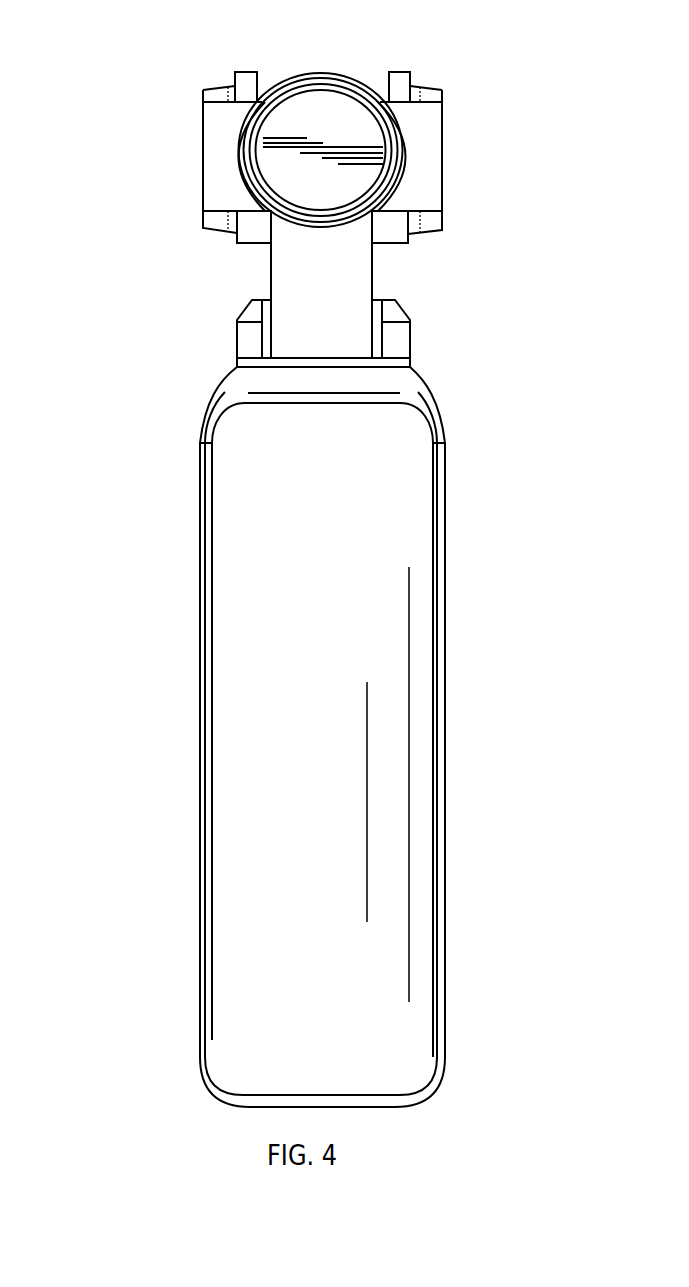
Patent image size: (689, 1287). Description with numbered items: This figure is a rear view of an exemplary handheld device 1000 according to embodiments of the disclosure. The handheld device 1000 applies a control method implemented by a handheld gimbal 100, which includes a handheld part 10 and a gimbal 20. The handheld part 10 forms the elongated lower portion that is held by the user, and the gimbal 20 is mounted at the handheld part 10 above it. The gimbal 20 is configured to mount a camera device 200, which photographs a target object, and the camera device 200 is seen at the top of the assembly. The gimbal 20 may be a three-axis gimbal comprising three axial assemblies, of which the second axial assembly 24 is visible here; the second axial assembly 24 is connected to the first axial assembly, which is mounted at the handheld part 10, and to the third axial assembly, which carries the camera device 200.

The handheld device 1000 is at (143, 32).
The handheld gimbal 100 is at (165, 387).
The handheld part 10 is at (417, 690).
The gimbal 20 is at (405, 258).
The camera device 200 is at (372, 83).
The second axial assembly 24 is at (304, 135).